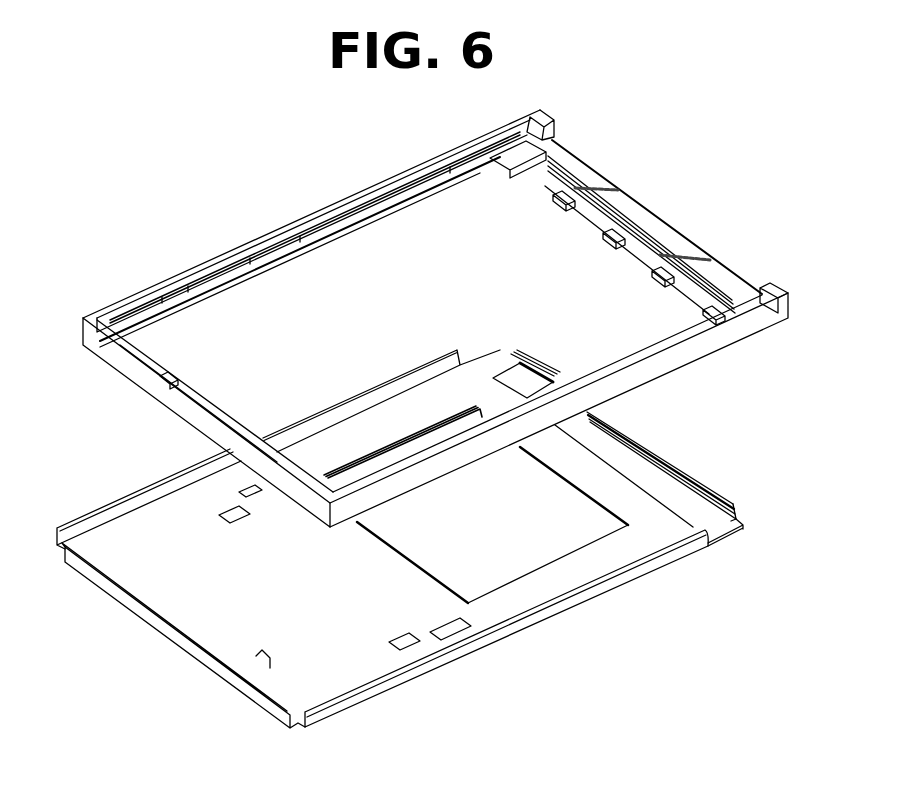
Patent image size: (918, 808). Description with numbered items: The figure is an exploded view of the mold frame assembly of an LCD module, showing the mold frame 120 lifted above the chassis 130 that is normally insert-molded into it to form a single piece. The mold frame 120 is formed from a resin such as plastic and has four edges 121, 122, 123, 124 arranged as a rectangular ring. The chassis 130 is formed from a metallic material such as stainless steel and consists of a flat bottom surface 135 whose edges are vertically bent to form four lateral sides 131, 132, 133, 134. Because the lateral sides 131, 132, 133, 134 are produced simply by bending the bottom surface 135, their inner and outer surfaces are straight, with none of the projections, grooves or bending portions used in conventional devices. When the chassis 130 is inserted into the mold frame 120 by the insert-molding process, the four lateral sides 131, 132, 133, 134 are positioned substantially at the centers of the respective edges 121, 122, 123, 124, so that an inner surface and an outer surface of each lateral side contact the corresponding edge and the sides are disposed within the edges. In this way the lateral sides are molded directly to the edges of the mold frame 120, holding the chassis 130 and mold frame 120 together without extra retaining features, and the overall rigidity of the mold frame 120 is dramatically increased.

The mold frame 120 is at (271, 226).
The edge of the mold frame 121 is at (345, 200).
The edge of the mold frame 122 is at (690, 349).
The edge of the mold frame 123 is at (142, 375).
The edge of the mold frame 124 is at (590, 178).
The lateral side of the chassis 131 is at (362, 402).
The chassis 130 is at (198, 667).
The lateral side of the chassis 132 is at (627, 577).
The lateral side of the chassis 133 is at (142, 610).
The lateral side of the chassis 134 is at (717, 493).
The bottom surface 135 is at (256, 656).